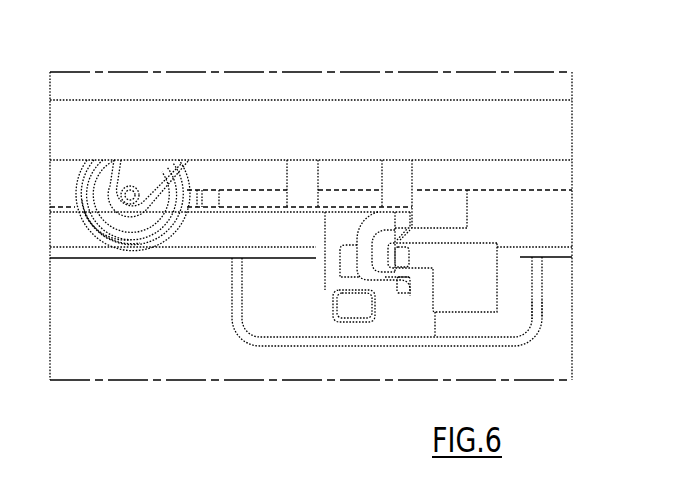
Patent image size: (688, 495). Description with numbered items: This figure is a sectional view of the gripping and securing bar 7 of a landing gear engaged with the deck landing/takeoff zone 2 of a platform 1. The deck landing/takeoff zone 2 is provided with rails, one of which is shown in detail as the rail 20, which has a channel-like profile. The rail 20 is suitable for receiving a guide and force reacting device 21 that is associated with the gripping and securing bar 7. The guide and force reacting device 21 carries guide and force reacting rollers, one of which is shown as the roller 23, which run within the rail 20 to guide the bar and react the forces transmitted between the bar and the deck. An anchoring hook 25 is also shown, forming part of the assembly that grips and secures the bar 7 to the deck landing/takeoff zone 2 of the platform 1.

The gripping and securing bar 7 is at (403, 85).
The platform 1 is at (116, 284).
The deck landing/takeoff zone 2 is at (170, 271).
The rail 20 is at (233, 325).
The guide and force reacting device 21 is at (322, 276).
The guide and force reacting roller 23 is at (343, 271).
The anchoring hook 25 is at (398, 300).